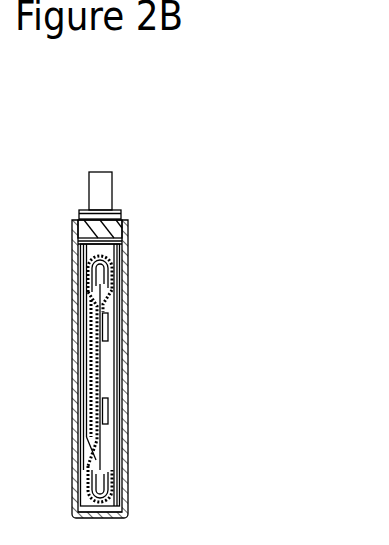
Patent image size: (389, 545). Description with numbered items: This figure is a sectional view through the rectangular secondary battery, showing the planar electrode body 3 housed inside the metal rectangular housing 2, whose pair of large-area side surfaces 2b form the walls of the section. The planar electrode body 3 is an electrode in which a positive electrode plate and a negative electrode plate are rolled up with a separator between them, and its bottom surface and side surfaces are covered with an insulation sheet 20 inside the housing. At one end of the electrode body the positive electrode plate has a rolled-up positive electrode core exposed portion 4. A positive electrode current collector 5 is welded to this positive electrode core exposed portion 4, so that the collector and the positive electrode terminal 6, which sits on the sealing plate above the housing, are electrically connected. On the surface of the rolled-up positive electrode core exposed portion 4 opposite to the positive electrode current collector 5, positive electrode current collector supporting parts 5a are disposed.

The rectangular housing 2 is at (138, 369).
The large-area side surface 2b is at (125, 493).
The insulation sheet 20 is at (128, 258).
The positive electrode terminal 6 is at (129, 170).
The planar electrode body 3 is at (104, 362).
The positive electrode core exposed portion 4 is at (96, 460).
The positive electrode current collector 5 is at (93, 370).
The positive electrode current collector supporting part 5a is at (108, 318).